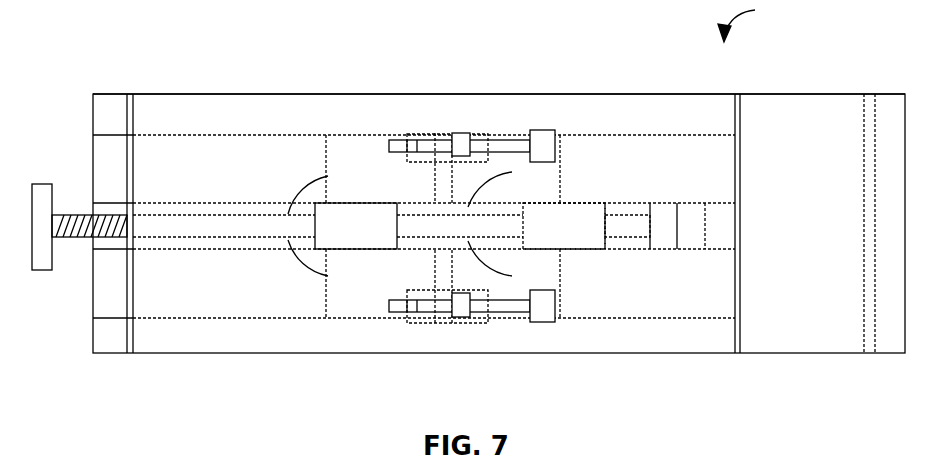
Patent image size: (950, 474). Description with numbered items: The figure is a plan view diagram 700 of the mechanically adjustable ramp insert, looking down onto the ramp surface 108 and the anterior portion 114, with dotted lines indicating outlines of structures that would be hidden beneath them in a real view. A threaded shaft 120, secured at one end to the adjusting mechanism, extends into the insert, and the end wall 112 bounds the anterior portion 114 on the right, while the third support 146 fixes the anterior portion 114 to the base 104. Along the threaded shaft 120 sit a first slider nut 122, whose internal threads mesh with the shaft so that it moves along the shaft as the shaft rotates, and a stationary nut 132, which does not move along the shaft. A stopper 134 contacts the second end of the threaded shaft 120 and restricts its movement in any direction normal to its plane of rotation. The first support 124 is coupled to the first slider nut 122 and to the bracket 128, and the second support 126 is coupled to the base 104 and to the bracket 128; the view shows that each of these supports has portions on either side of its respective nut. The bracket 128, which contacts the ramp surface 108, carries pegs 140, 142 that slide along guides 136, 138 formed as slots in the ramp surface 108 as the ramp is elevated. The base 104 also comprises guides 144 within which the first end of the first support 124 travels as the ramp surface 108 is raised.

The plan view diagram 700 is at (771, 21).
The base 104 is at (105, 342).
The ramp surface 108 is at (417, 102).
The second end wall 112 is at (737, 100).
The anterior portion 114 is at (776, 240).
The threaded shaft 120 is at (70, 237).
The first slider nut 122 is at (335, 241).
The first support 124 is at (296, 226).
The second support 126 is at (479, 224).
The bracket 128 is at (411, 130).
The stationary nut 132 is at (33, 184).
The stopper 134 is at (668, 209).
The guide 136 is at (545, 140).
The guide 138 is at (545, 300).
The peg 140 is at (459, 142).
The peg 142 is at (459, 315).
The guide 144 is at (190, 184).
The third support 146 is at (870, 100).